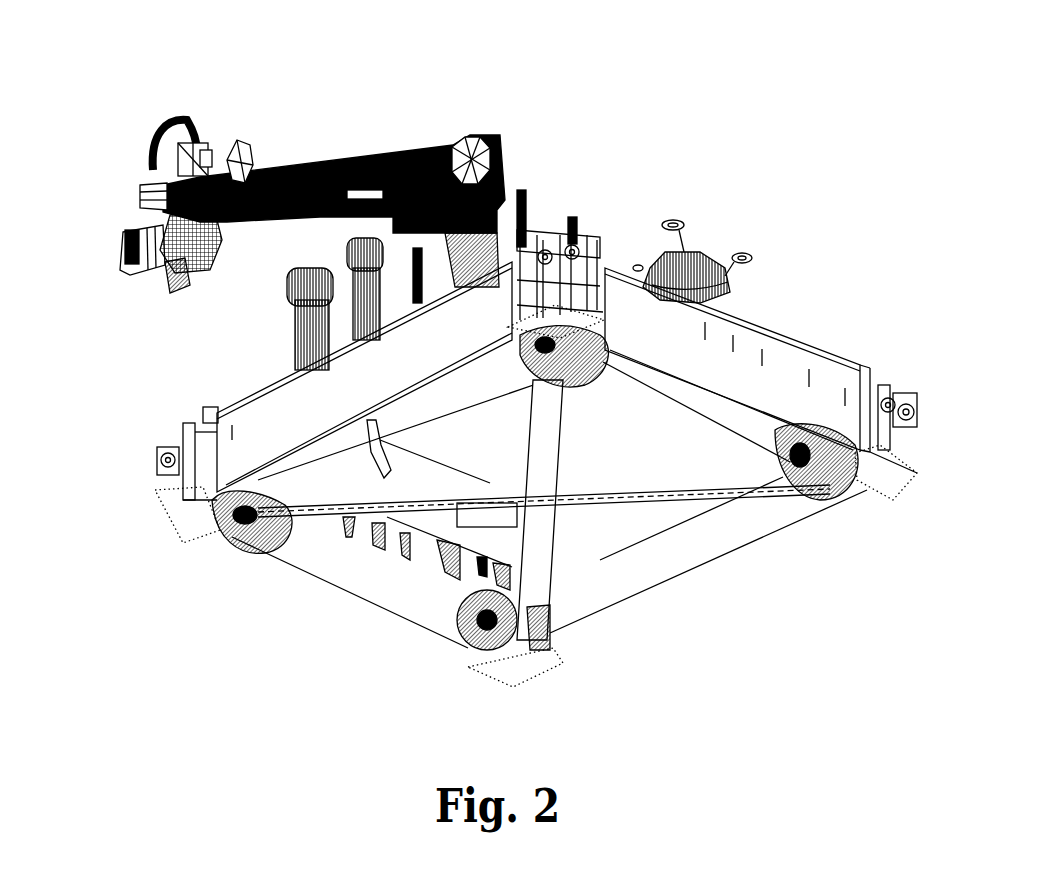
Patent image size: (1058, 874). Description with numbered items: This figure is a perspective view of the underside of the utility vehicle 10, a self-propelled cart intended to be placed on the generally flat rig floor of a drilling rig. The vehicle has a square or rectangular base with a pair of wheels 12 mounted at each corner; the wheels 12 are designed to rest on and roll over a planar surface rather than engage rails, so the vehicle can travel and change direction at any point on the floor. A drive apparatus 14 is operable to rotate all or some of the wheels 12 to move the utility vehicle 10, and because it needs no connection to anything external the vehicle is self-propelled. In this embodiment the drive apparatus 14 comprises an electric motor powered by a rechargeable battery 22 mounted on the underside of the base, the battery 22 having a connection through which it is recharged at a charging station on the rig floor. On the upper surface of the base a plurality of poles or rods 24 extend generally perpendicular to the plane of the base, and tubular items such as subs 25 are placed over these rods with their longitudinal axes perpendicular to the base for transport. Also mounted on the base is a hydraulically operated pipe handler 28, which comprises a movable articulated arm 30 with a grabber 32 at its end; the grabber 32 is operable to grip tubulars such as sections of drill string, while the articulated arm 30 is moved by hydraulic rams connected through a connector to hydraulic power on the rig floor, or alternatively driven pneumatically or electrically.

The utility vehicle 10 is at (842, 320).
The wheels 12 is at (605, 338).
The drive apparatus 14 is at (714, 423).
The battery 22 is at (657, 515).
The poles or rods 24 is at (527, 200).
The subs 25 is at (297, 337).
The pipe handler 28 is at (287, 155).
The articulated arm 30 is at (407, 148).
The grabber 32 is at (125, 252).